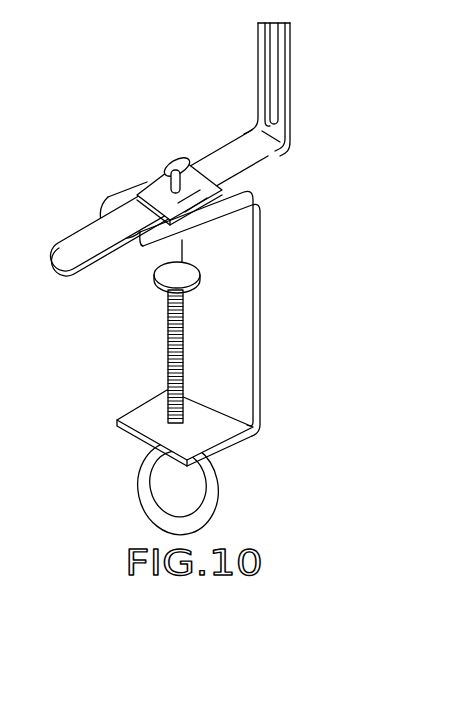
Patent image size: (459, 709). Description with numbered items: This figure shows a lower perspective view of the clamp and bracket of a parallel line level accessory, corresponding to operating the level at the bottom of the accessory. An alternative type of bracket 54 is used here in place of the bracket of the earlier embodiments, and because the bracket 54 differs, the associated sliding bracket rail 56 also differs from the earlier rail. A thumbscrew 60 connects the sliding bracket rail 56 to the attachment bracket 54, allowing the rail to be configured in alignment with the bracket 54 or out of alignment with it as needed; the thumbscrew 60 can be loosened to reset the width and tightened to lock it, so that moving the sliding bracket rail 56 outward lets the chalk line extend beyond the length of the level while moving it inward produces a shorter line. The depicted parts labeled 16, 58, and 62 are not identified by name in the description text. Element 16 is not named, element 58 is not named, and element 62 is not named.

The clamp screw 16 is at (167, 363).
The bracket 54 is at (240, 246).
The sliding bracket rail 56 is at (273, 89).
The bar 58 is at (163, 192).
The thumbscrew 60 is at (178, 158).
The slot 62 is at (268, 78).